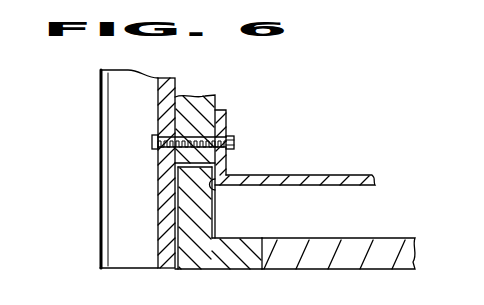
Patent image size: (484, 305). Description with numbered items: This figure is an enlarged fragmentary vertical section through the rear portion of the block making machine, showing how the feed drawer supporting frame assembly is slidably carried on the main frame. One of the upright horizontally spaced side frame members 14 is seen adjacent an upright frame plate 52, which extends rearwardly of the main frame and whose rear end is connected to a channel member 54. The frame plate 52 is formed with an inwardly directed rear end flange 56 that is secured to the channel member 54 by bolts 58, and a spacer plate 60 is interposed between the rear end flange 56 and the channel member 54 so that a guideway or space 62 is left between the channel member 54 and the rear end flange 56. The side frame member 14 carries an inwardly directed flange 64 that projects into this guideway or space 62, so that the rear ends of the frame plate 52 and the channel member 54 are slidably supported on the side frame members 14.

The side frame members 14 is at (352, 245).
The upright frame plate 52 is at (318, 184).
The channel member 54 is at (117, 115).
The rear end flange 56 is at (223, 160).
The bolts 58 is at (235, 142).
The spacer plate 60 is at (200, 103).
The guideway or space 62 is at (216, 188).
The inwardly directed flange 64 is at (203, 218).